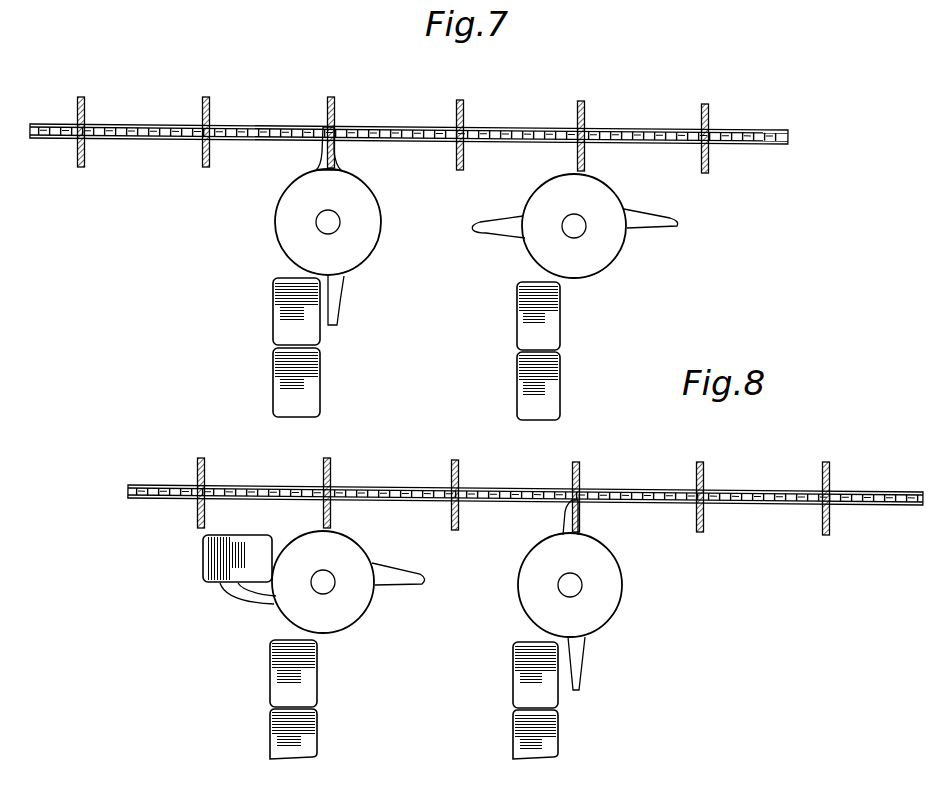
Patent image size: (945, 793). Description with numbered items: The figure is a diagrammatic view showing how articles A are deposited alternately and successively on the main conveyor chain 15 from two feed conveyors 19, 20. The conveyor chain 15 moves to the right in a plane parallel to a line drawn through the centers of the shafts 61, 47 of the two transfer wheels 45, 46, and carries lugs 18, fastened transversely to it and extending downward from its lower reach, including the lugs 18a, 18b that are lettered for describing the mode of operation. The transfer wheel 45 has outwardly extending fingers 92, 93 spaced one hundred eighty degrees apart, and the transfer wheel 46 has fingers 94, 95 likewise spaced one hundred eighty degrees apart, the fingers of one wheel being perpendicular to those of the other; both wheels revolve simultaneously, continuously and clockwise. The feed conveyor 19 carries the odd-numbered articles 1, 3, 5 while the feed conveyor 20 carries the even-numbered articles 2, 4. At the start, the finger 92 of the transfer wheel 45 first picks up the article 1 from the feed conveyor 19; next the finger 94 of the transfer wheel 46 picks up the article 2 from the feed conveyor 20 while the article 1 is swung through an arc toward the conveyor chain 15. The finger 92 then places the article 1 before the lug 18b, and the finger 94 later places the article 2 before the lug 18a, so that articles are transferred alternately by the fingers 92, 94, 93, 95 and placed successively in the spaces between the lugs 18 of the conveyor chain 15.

In FIG. 7, the conveyor chain 15 is at (767, 126).
In FIG. 8, the conveyor chain 15 is at (762, 490).
In FIG. 7, the lugs 18 is at (335, 100).
In FIG. 8, the lugs 18 is at (458, 462).
In FIG. 7, the lug 18a is at (210, 100).
In FIG. 8, the lug 18a is at (331, 462).
In FIG. 7, the lug 18b is at (85, 100).
In FIG. 8, the lug 18b is at (205, 458).
In FIG. 7, the transfer wheel 45 is at (372, 250).
In FIG. 8, the transfer wheel 45 is at (372, 597).
In FIG. 7, the transfer wheel 46 is at (612, 262).
In FIG. 8, the transfer wheel 46 is at (615, 602).
In FIG. 7, the shaft 47 is at (582, 233).
In FIG. 8, the shaft 47 is at (582, 581).
In FIG. 7, the shaft 61 is at (322, 226).
In FIG. 8, the shaft 61 is at (330, 590).
In FIG. 7, the finger 92 is at (338, 320).
In FIG. 8, the finger 92 is at (243, 591).
In FIG. 7, the finger 93 is at (320, 164).
In FIG. 8, the finger 93 is at (419, 577).
In FIG. 7, the finger 94 is at (678, 222).
In FIG. 8, the finger 94 is at (579, 655).
In FIG. 7, the finger 95 is at (495, 235).
In FIG. 8, the finger 95 is at (562, 512).
In FIG. 7, the feed conveyor 19 is at (330, 350).
In FIG. 8, the feed conveyor 19 is at (318, 699).
In FIG. 7, the feed conveyor 20 is at (564, 351).
In FIG. 8, the feed conveyor 20 is at (565, 700).
In FIG. 7, the article 1 is at (296, 311).
In FIG. 8, the article 1 is at (237, 558).
In FIG. 7, the article 2 is at (538, 316).
In FIG. 8, the article 2 is at (535, 675).
In FIG. 7, the article 3 is at (296, 382).
In FIG. 8, the article 3 is at (293, 673).
In FIG. 7, the article 4 is at (538, 386).
In FIG. 8, the article 4 is at (535, 734).
In FIG. 8, the article 5 is at (293, 734).
In FIG. 7, the articles A is at (273, 372).
In FIG. 8, the articles A is at (270, 724).